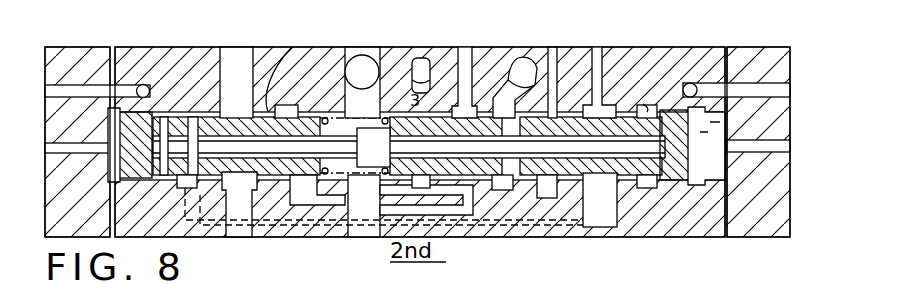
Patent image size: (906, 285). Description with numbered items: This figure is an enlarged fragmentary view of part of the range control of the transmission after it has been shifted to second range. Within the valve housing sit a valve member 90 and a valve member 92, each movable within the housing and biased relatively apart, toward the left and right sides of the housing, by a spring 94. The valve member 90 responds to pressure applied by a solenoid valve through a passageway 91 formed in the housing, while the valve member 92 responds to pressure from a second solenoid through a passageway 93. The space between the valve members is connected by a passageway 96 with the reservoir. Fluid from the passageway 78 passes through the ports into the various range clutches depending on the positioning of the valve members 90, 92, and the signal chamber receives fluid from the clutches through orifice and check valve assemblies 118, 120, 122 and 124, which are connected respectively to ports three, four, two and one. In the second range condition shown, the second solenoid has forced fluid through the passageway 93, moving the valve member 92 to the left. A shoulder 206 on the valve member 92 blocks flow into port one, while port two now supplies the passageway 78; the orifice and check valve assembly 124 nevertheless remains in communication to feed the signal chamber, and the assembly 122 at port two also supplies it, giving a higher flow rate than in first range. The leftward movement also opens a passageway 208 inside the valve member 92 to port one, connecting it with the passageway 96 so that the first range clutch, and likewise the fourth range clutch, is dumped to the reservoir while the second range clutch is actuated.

The passageway 78 is at (238, 60).
The valve member 90 is at (285, 47).
The passageway 91 is at (78, 150).
The valve member 92 is at (672, 112).
The passageway 93 is at (760, 150).
The spring 94 is at (326, 172).
The passageway 96 is at (375, 55).
The orifice and check valve assembly 118 is at (462, 57).
The orifice and check valve assembly 120 is at (505, 55).
The orifice and check valve assembly 122 is at (553, 55).
The orifice and check valve assembly 124 is at (594, 55).
The shoulder 206 is at (624, 110).
The passageway 208 is at (613, 148).